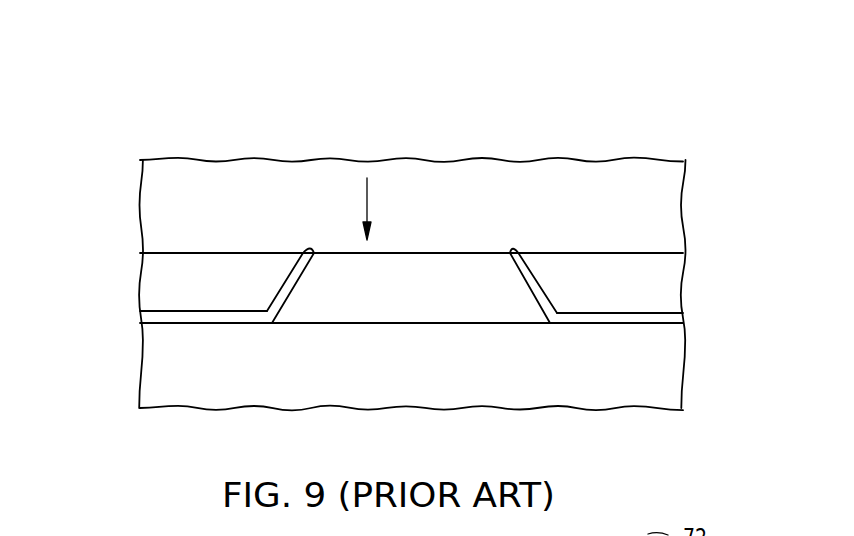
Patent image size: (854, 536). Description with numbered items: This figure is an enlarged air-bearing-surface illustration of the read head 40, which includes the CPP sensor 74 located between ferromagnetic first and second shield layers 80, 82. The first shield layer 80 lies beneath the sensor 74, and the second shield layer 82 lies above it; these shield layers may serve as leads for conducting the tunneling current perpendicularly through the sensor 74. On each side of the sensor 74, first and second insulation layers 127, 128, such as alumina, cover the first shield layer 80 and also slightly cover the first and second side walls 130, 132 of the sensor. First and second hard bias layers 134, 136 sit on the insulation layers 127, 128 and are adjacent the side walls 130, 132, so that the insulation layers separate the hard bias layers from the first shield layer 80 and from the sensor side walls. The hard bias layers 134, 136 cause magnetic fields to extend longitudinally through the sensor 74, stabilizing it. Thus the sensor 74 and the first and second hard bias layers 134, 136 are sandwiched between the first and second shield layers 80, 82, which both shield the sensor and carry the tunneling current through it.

The read head 40 is at (276, 153).
The second shield layer 82 is at (662, 206).
The first shield layer 80 is at (245, 385).
The CPP sensor 74 is at (468, 253).
The first side wall 130 is at (287, 277).
The second side wall 132 is at (533, 275).
The first hard bias layer 134 is at (199, 262).
The second hard bias layer 136 is at (620, 262).
The first insulation layer 127 is at (193, 317).
The second insulation layer 128 is at (605, 317).